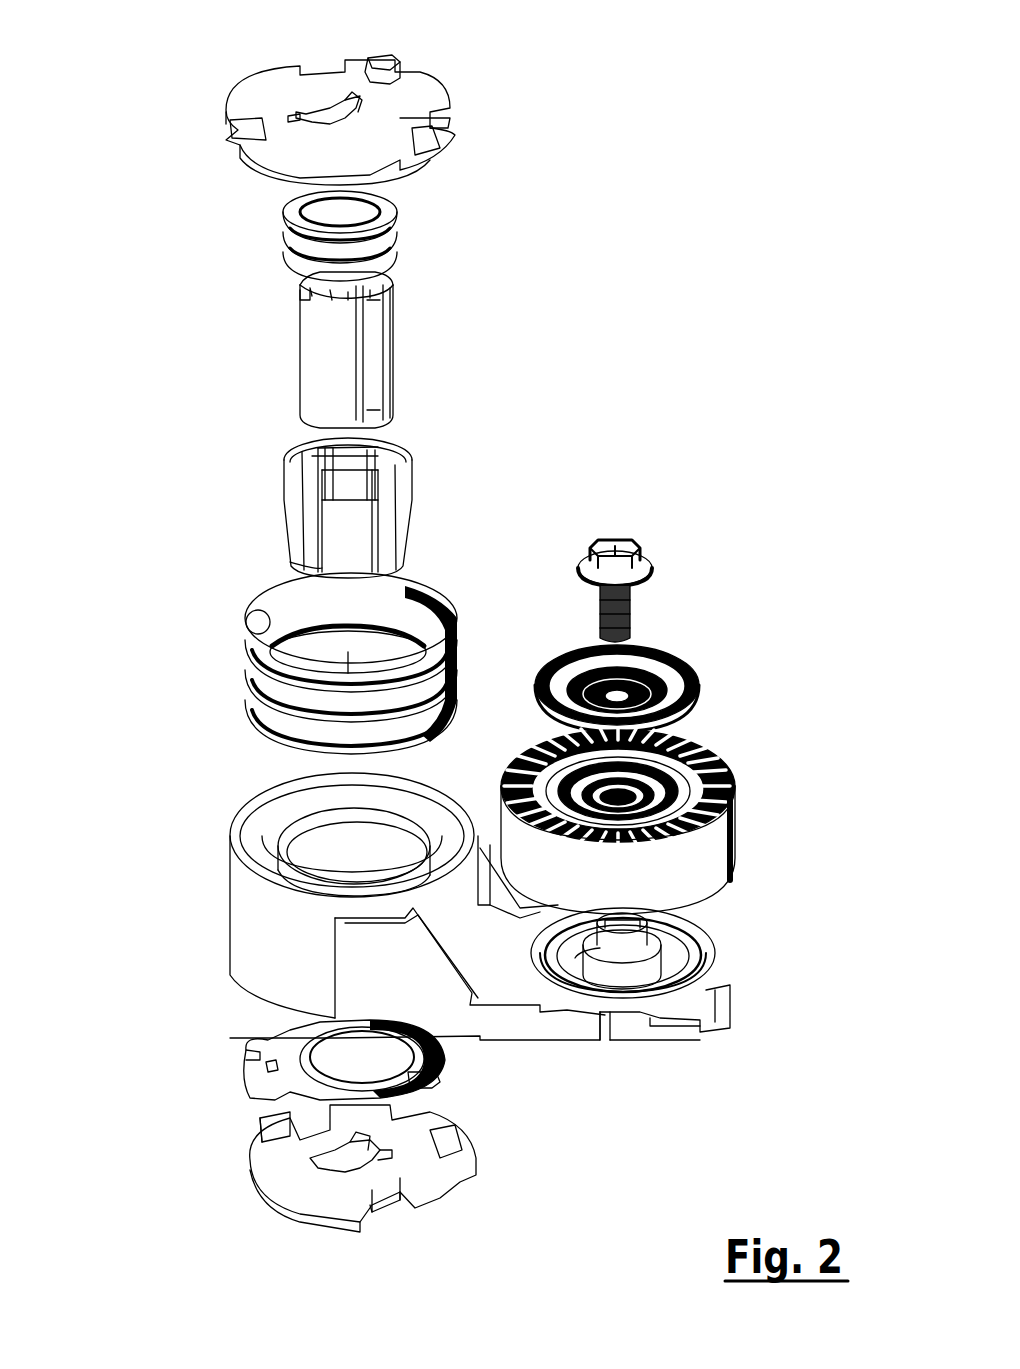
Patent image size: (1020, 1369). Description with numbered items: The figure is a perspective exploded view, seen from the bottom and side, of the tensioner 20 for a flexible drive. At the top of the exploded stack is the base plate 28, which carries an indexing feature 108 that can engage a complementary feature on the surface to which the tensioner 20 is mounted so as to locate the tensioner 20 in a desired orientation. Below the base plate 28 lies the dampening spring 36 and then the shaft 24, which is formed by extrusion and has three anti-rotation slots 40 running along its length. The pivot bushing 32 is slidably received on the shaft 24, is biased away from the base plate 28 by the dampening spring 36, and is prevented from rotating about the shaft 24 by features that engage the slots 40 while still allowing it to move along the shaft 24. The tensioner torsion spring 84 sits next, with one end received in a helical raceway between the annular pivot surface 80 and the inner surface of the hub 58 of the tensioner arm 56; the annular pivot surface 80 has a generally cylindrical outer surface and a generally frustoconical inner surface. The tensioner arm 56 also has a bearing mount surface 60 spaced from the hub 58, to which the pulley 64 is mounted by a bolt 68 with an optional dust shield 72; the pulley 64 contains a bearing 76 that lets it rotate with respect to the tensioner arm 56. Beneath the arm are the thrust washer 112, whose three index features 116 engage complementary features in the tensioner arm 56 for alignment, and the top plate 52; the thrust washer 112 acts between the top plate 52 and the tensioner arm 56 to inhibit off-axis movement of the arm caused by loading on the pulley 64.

The tensioner 20 is at (750, 80).
The shaft 24 is at (292, 325).
The base plate 28 is at (242, 92).
The pivot bushing 32 is at (284, 510).
The dampening spring 36 is at (270, 222).
The slots 40 is at (364, 382).
The top plate 52 is at (250, 1166).
The tensioner arm 56 is at (218, 930).
The hub 58 is at (248, 821).
The bearing mount surface 60 is at (694, 952).
The pulley 64 is at (732, 842).
The bolt 68 is at (642, 566).
The dust shield 72 is at (690, 668).
The bearing 76 is at (688, 762).
The annular pivot surface 80 is at (298, 828).
The tensioner torsion spring 84 is at (262, 600).
The indexing feature 108 is at (405, 66).
The thrust washer 112 is at (258, 1056).
The index feature 116 is at (432, 1076).